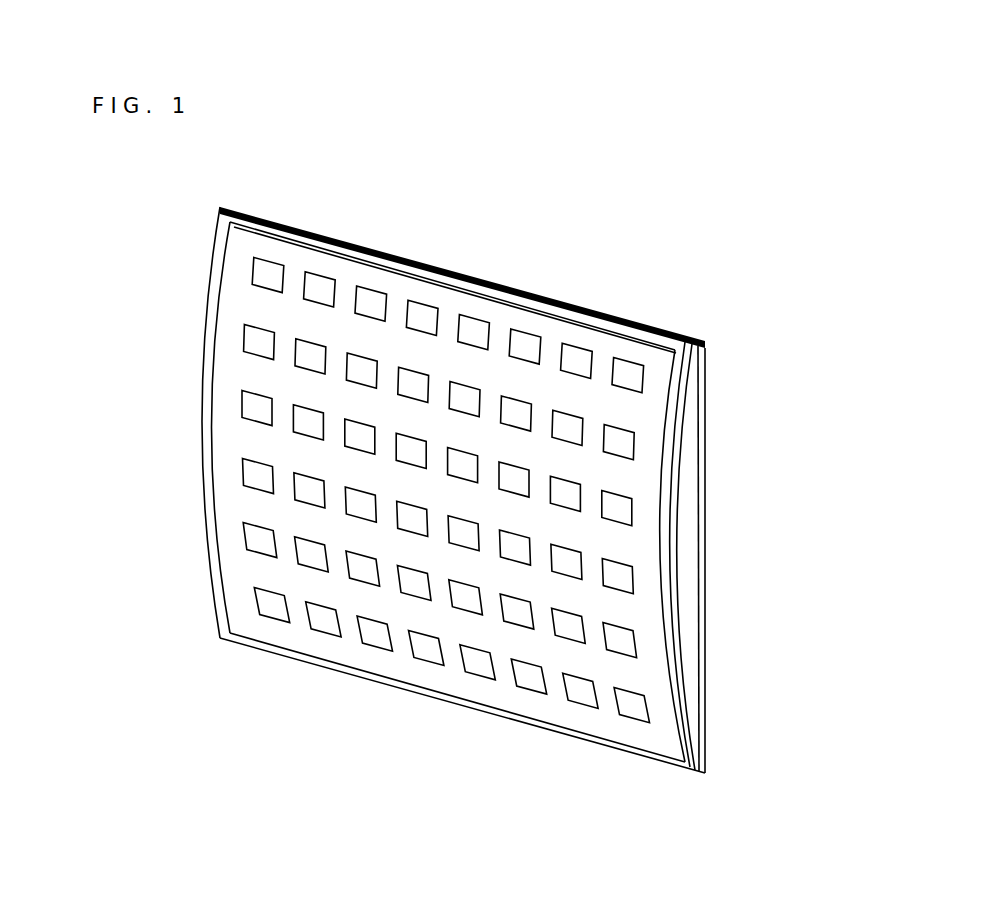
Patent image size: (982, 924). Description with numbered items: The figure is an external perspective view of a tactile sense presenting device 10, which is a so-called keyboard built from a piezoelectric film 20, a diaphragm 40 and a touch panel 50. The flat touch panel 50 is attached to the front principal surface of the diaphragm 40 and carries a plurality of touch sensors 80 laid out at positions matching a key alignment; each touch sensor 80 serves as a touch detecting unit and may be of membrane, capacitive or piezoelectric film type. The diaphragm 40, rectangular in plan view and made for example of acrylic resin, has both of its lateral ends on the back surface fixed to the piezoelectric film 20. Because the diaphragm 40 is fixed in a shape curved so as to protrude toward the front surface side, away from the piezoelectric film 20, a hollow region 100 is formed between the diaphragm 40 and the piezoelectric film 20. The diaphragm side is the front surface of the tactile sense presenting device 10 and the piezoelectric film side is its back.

The tactile sense presenting device 10 is at (680, 256).
The piezoelectric film 20 is at (704, 379).
The diaphragm 40 is at (615, 748).
The touch panel 50 is at (332, 266).
The touch sensor 80 is at (426, 298).
The hollow region 100 is at (700, 620).